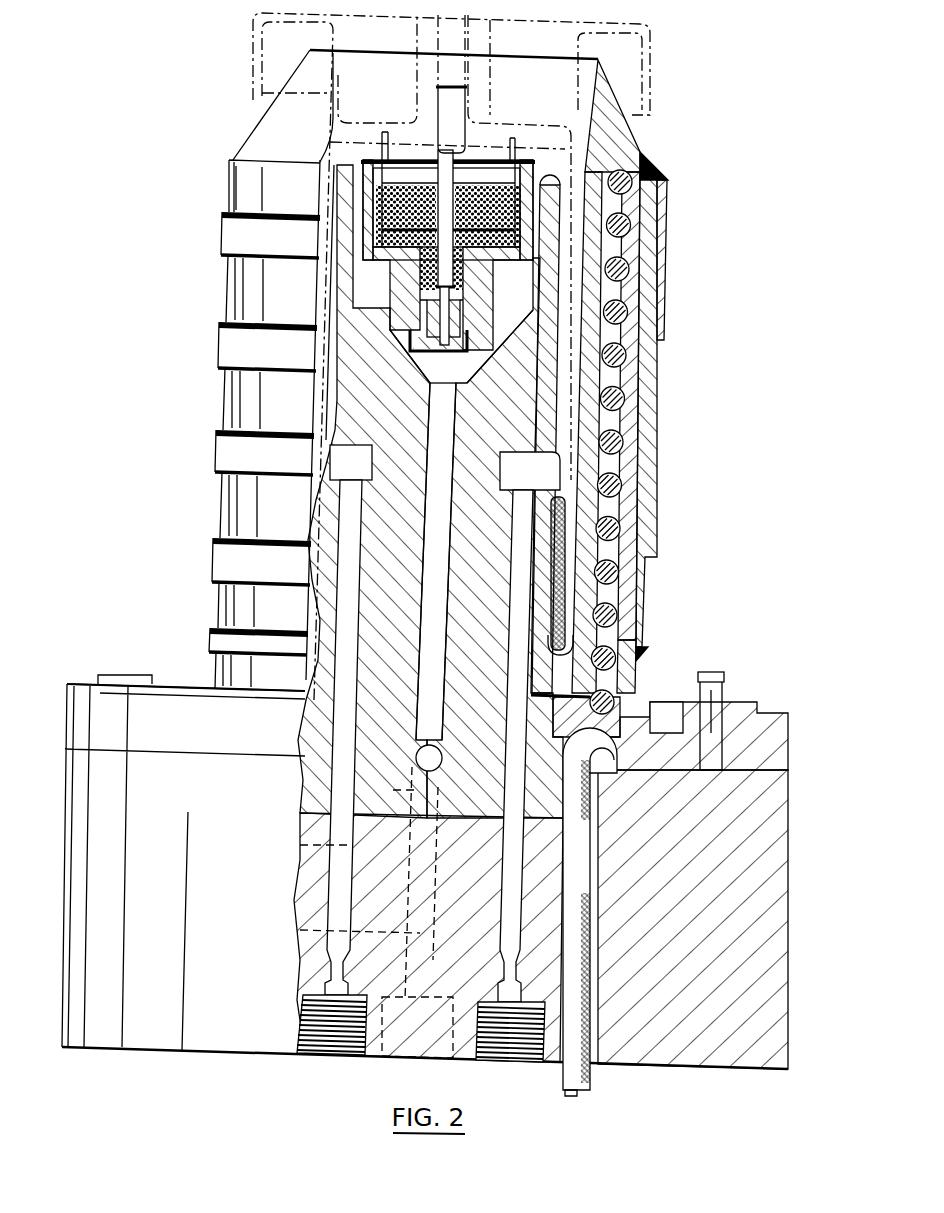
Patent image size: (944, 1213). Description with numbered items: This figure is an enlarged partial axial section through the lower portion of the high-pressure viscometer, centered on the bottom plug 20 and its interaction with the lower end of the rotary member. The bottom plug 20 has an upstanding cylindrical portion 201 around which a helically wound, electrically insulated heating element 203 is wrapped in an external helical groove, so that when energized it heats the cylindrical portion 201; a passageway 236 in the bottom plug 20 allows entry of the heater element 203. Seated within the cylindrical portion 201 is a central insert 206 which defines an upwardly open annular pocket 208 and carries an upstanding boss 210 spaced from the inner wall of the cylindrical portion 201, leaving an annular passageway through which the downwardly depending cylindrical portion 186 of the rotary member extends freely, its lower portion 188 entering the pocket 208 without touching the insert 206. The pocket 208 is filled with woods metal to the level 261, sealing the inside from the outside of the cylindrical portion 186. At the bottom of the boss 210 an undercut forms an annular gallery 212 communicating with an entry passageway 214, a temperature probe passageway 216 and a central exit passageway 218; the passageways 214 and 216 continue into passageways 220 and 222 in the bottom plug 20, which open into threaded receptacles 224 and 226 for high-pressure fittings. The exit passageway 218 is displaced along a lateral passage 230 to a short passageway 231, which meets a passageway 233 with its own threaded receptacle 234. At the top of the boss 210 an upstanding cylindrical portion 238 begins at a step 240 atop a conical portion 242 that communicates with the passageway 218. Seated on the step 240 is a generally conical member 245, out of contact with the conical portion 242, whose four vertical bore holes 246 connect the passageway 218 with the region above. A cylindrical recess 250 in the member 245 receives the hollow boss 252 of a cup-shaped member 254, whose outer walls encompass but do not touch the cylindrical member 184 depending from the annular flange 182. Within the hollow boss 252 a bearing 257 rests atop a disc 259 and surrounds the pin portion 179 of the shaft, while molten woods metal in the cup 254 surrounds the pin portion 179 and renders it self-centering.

The bottom plug 20 is at (693, 1055).
The pin portion 179 is at (470, 372).
The annular flange 182 is at (527, 137).
The cylindrical member 184 is at (597, 177).
The cylindrical portion 186 is at (558, 413).
The lower portion 188 is at (553, 587).
The cylindrical portion 201 is at (612, 506).
The heating element 203 is at (612, 624).
The central insert 206 is at (370, 652).
The annular pocket 208 is at (553, 552).
The boss 210 is at (343, 397).
The annular gallery 212 is at (518, 462).
The entry passageway 214 is at (380, 695).
The temperature probe passageway 216 is at (522, 720).
The exit passageway 218 is at (427, 600).
The passageway 220 is at (335, 895).
The passageway 222 is at (545, 886).
The threaded receptacle 224 is at (310, 1050).
The threaded receptacle 226 is at (519, 1060).
The lateral passage 230 is at (416, 752).
The short passageway 231 is at (340, 845).
The passageway 233 is at (335, 930).
The threaded receptacle 234 is at (438, 1058).
The passageway 236 is at (592, 1032).
The cylindrical portion 238 is at (525, 230).
The step 240 is at (495, 368).
The conical portion 242 is at (495, 538).
The member 245 is at (425, 305).
The vertical bore holes 246 is at (372, 278).
The cylindrical recess 250 is at (420, 338).
The hollow boss 252 is at (388, 293).
The cup-shaped member 254 is at (367, 213).
The bearing 257 is at (430, 321).
The disc 259 is at (370, 366).
The level 261 is at (580, 500).